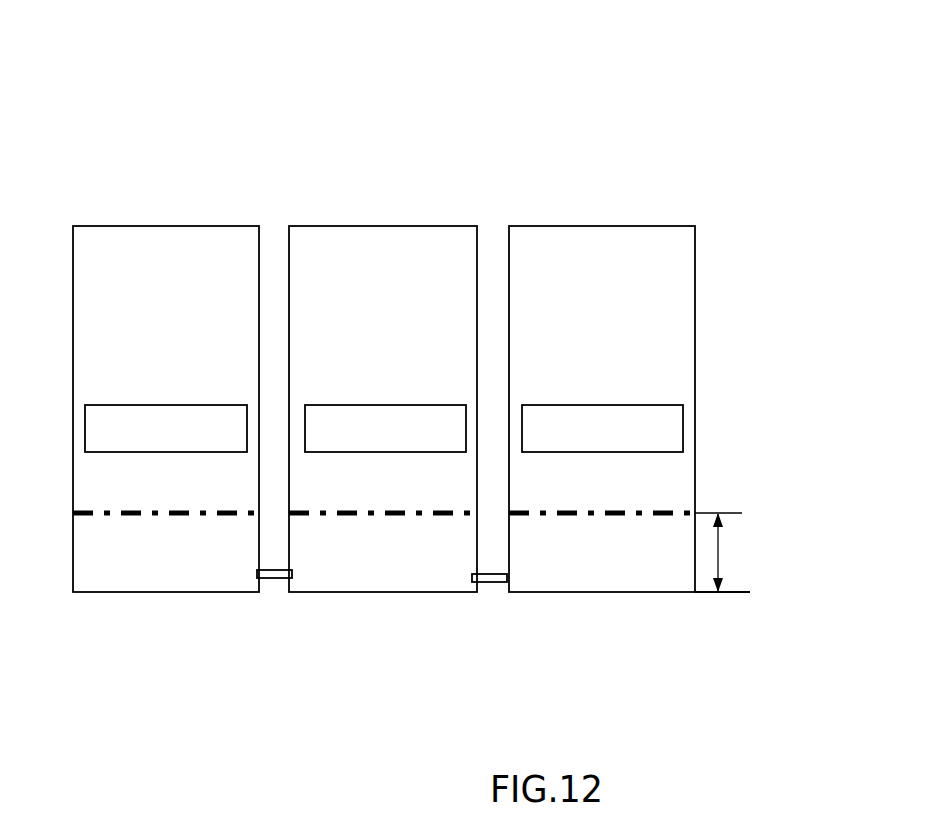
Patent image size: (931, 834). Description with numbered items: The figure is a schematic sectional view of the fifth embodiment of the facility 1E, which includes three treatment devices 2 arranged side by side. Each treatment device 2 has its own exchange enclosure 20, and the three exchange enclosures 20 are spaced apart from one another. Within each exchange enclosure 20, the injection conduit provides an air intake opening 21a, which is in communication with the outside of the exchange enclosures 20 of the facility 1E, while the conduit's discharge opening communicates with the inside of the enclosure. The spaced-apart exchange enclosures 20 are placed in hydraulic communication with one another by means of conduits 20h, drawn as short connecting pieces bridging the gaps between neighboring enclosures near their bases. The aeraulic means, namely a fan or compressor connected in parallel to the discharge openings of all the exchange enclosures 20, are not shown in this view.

The facility 1E is at (700, 117).
The treatment device 2 is at (157, 198).
The exchange enclosure 20 is at (185, 337).
The air intake opening 21a is at (179, 433).
The conduit 20h is at (275, 578).